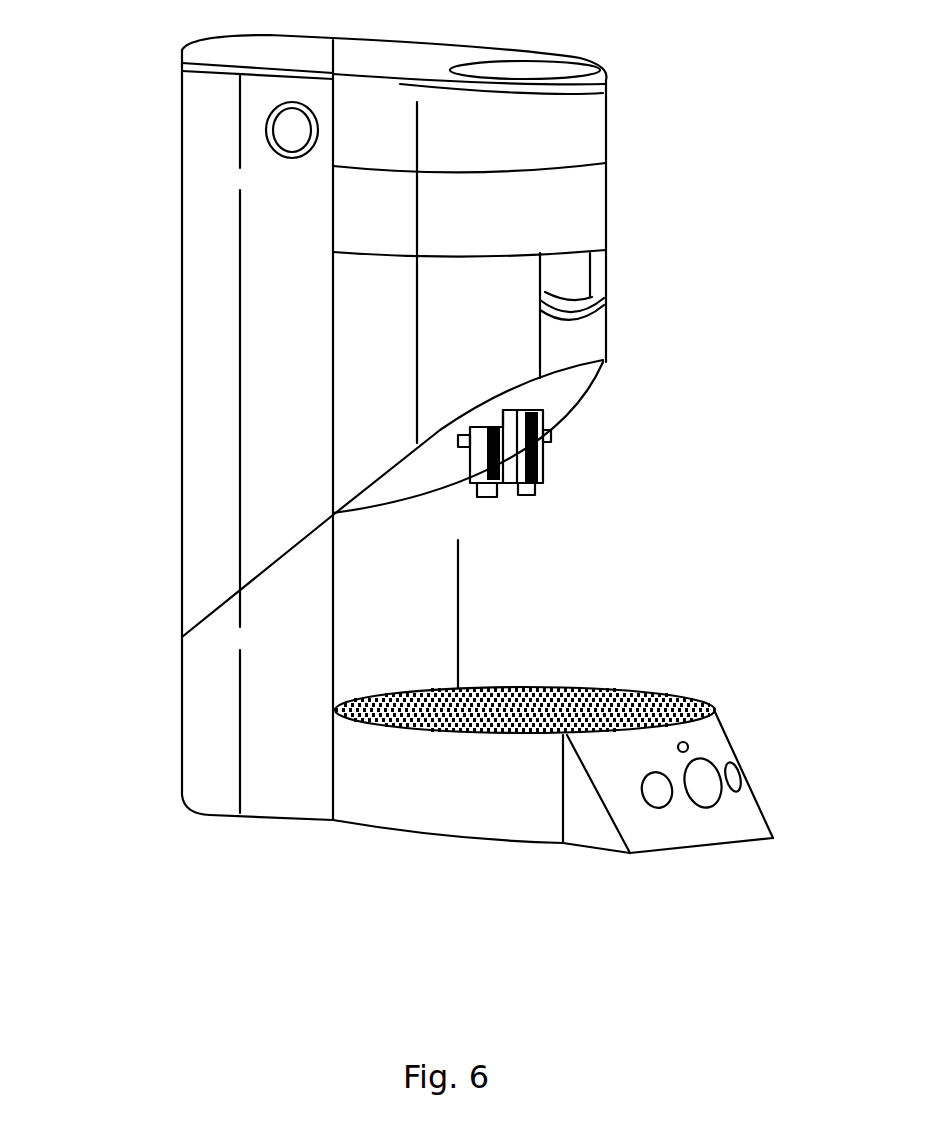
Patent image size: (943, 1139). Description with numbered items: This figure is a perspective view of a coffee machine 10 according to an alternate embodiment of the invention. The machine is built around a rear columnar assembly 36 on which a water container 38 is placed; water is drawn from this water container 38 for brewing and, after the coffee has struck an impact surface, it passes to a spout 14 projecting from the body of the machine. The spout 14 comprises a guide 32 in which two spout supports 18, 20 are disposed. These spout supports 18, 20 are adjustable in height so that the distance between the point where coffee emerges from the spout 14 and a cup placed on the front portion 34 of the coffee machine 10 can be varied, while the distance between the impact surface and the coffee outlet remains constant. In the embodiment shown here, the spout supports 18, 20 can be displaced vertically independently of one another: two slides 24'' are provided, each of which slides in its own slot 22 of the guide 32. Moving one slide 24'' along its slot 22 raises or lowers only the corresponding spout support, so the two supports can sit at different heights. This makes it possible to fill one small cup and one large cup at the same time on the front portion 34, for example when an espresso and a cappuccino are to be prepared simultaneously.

The coffee machine 10 is at (120, 244).
The spout 14 is at (547, 462).
The spout support 18 is at (480, 497).
The spout support 20 is at (532, 497).
The slot 22 is at (463, 490).
The slides 24'' is at (568, 390).
The guide 32 is at (507, 497).
The front portion 34 is at (648, 697).
The rear columnar assembly 36 is at (178, 723).
The water container 38 is at (178, 482).